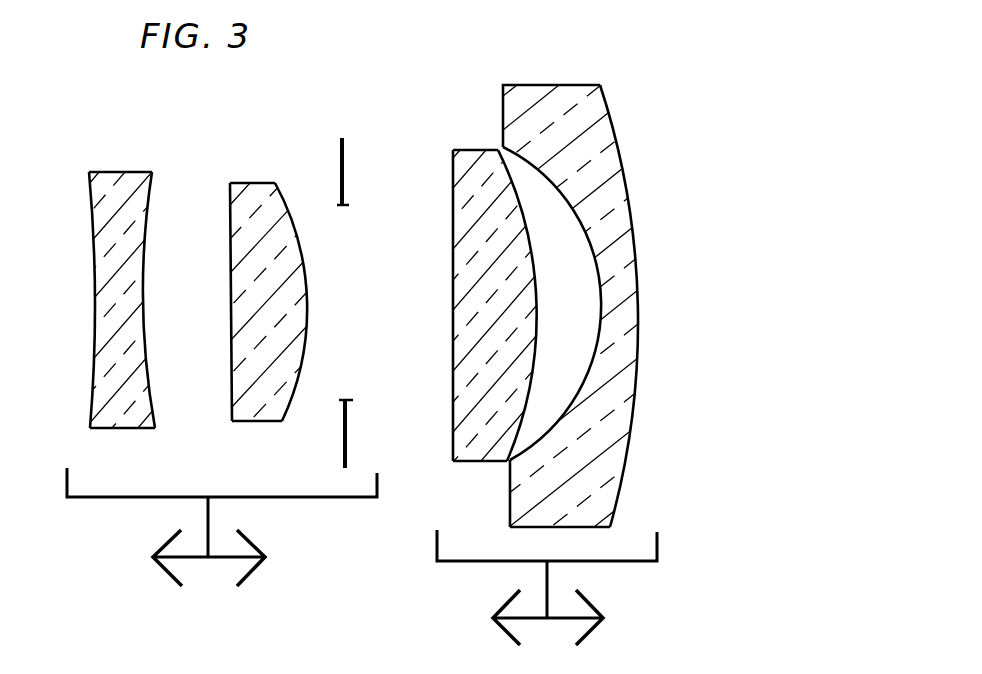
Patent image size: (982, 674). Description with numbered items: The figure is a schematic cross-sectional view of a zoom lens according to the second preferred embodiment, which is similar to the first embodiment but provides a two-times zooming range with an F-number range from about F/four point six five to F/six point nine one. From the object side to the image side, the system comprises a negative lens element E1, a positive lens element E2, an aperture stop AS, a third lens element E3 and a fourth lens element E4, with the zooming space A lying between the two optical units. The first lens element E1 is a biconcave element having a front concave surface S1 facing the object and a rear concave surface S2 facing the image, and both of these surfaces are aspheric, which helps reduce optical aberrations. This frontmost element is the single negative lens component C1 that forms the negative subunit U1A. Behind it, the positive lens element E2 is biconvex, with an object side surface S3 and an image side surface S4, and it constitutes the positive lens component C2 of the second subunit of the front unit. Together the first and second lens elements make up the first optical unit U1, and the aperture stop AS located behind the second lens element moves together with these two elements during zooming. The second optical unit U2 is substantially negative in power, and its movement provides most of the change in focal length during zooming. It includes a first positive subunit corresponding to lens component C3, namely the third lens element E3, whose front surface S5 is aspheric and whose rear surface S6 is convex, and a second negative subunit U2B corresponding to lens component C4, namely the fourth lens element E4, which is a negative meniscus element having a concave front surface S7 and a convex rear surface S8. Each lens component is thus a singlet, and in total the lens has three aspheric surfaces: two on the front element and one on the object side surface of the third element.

The negative lens element E1 is at (95, 293).
The positive lens element E2 is at (248, 294).
The third lens element E3 is at (463, 295).
The fourth lens element E4 is at (549, 267).
The front concave surface S1 is at (88, 184).
The rear concave surface S2 is at (152, 195).
The object side surface S3 is at (228, 192).
The image side surface S4 is at (284, 197).
The front surface S5 is at (450, 198).
The rear convex surface S6 is at (514, 170).
The concave front surface S7 is at (542, 160).
The convex rear surface S8 is at (609, 108).
The aperture stop AS is at (344, 140).
The zooming space A is at (401, 287).
The first optical unit U1 is at (222, 545).
The second optical unit U2 is at (547, 602).
The first lens subunit U1A is at (95, 293).
The second negative subunit U2B is at (248, 294).
The lens component C1 is at (128, 420).
The lens component C2 is at (270, 408).
The lens component C3 is at (477, 443).
The lens component C4 is at (612, 478).